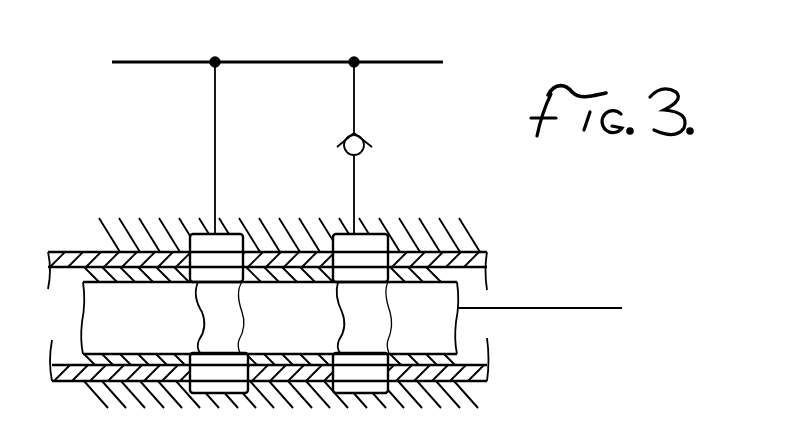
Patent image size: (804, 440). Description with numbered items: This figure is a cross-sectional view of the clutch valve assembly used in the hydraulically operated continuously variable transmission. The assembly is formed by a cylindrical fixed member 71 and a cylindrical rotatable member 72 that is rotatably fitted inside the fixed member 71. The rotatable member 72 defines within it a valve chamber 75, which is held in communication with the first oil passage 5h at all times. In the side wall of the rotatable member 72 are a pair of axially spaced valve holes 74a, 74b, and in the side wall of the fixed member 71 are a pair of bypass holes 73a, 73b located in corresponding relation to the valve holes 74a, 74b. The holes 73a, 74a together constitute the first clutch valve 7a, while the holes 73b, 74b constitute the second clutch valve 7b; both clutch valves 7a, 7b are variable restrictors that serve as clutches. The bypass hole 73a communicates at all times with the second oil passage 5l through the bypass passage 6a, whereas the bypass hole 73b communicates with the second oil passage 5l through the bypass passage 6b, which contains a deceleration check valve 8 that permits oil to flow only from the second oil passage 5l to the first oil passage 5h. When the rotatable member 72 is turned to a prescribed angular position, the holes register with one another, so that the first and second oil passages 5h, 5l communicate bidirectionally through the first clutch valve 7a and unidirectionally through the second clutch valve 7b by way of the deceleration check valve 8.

The second oil passage 5l is at (407, 61).
The first oil passage 5h is at (587, 308).
The bypass passage 6a is at (216, 110).
The bypass passage 6b is at (355, 100).
The first clutch valve 7a is at (245, 212).
The second clutch valve 7b is at (384, 206).
The deceleration check valve 8 is at (366, 142).
The fixed member 71 is at (480, 246).
The rotatable member 72 is at (445, 250).
The bypass hole 73a is at (228, 337).
The bypass hole 73b is at (388, 337).
The valve hole 74a is at (196, 313).
The valve hole 74b is at (365, 317).
The valve chamber 75 is at (320, 330).